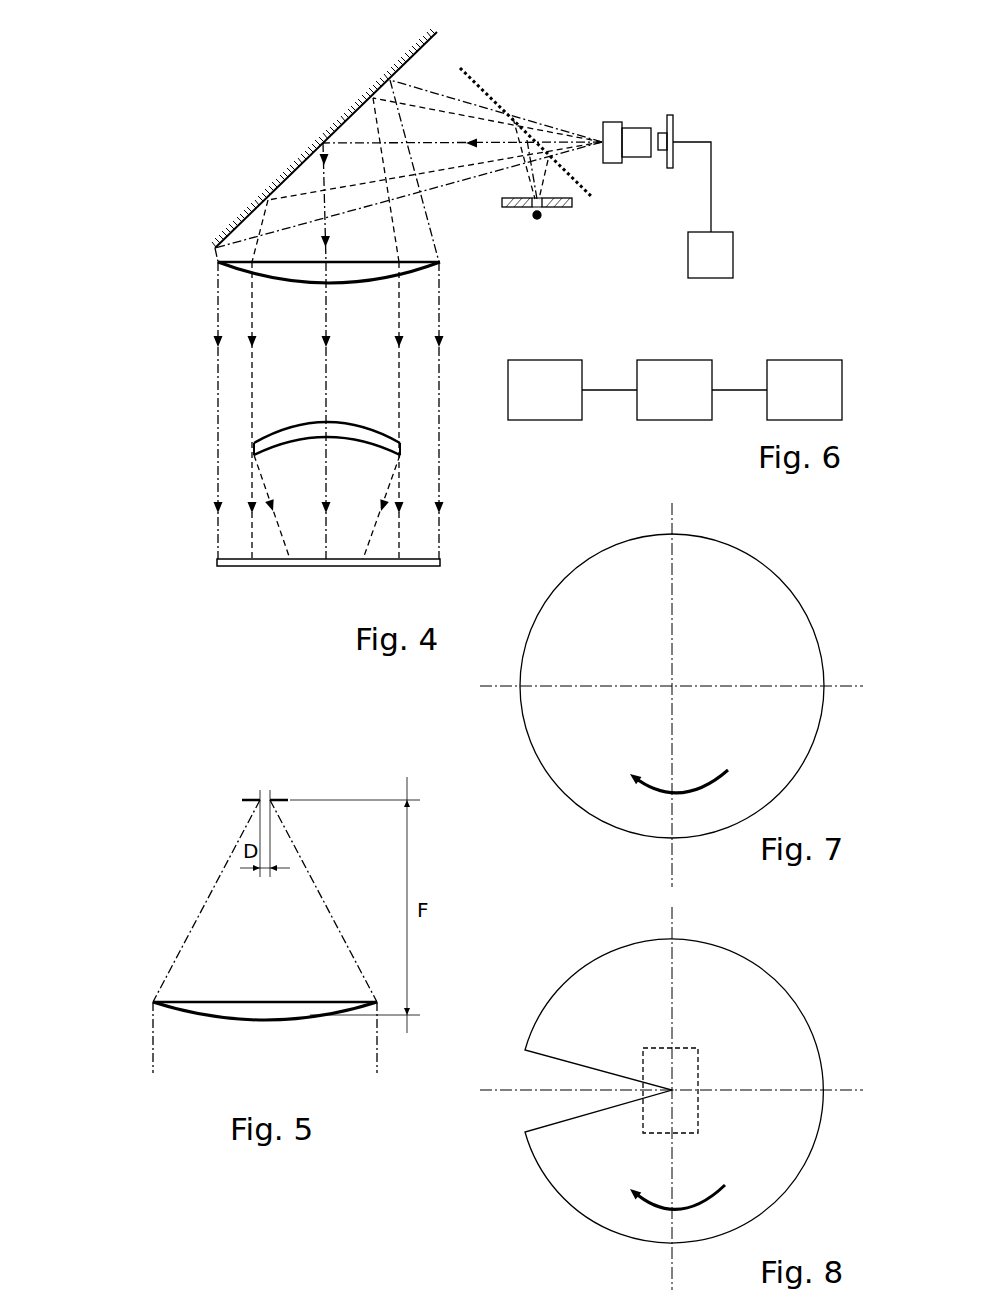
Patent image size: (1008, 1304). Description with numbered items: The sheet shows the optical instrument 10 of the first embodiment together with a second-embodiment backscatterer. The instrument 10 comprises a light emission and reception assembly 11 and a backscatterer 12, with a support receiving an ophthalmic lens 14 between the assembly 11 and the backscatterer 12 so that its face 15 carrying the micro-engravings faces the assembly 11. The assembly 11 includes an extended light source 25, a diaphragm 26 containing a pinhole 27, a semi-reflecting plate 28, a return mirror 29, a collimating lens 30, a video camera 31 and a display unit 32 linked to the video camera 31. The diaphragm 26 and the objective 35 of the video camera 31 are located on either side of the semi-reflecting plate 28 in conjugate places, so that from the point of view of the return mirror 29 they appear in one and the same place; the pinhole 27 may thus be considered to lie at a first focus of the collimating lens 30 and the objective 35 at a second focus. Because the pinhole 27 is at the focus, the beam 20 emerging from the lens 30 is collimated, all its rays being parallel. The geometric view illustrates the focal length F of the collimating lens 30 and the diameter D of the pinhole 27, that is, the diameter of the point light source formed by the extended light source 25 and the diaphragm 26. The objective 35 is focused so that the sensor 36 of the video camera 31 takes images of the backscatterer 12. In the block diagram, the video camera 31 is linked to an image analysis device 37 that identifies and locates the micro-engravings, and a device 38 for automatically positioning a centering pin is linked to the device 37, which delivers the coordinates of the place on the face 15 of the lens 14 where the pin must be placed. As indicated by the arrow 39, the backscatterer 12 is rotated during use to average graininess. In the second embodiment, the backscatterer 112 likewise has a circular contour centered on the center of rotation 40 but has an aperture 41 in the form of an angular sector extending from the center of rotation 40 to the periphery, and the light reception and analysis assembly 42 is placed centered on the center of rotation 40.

In FIG. 4, the optical instrument 10 is at (130, 132).
In FIG. 4, the light emission and reception assembly 11 is at (230, 196).
In FIG. 4, the backscatterer 12 is at (313, 567).
In FIG. 7, the backscatterer 12 is at (636, 548).
In FIG. 4, the ophthalmic lens 14 is at (378, 436).
In FIG. 4, the face 15 is at (356, 416).
In FIG. 4, the beam 20 is at (278, 398).
In FIG. 5, the beam 20 is at (165, 1048).
In FIG. 4, the extended light source 25 is at (535, 219).
In FIG. 4, the diaphragm 26 is at (573, 207).
In FIG. 5, the diaphragm 26 is at (258, 797).
In FIG. 4, the pinhole 27 is at (540, 212).
In FIG. 5, the pinhole 27 is at (263, 795).
In FIG. 4, the semi-reflecting plate 28 is at (479, 78).
In FIG. 4, the return mirror 29 is at (325, 137).
In FIG. 4, the collimating lens 30 is at (285, 270).
In FIG. 5, the collimating lens 30 is at (193, 1006).
In FIG. 4, the video camera 31 is at (634, 105).
In FIG. 6, the video camera 31 is at (532, 401).
In FIG. 4, the display unit 32 is at (698, 266).
In FIG. 4, the objective 35 is at (638, 145).
In FIG. 4, the sensor 36 is at (676, 122).
In FIG. 6, the image analysis device 37 is at (662, 401).
In FIG. 6, the device for automatically positioning a centering pin 38 is at (792, 401).
In FIG. 7, the arrow 39 is at (700, 798).
In FIG. 8, the arrow 39 is at (690, 1212).
In FIG. 7, the center of rotation 40 is at (672, 686).
In FIG. 8, the center of rotation 40 is at (672, 1090).
In FIG. 8, the aperture 41 is at (548, 1107).
In FIG. 8, the light reception and analysis assembly 42 is at (690, 1108).
In FIG. 8, the backscatterer 112 is at (597, 968).